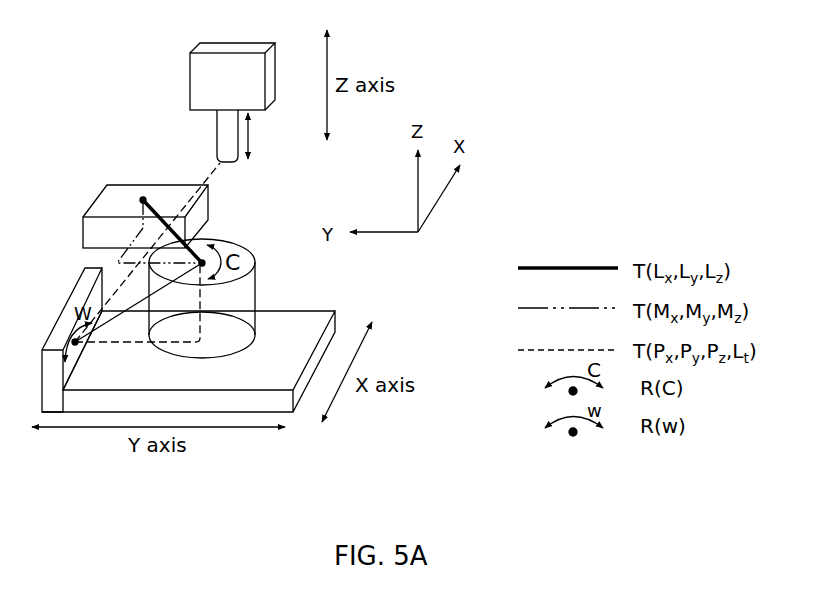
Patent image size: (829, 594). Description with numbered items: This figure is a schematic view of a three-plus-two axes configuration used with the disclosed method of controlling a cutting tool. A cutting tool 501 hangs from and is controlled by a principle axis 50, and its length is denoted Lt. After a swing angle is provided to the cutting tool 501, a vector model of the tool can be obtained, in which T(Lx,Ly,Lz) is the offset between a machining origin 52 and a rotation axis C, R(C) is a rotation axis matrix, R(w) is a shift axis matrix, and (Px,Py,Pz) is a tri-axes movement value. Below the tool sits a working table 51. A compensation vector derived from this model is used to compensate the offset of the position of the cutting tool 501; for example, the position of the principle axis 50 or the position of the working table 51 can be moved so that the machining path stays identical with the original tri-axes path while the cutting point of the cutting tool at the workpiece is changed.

The principle axis 50 is at (196, 95).
The cutting tool 501 is at (222, 130).
The machining origin 52 is at (143, 198).
The working table 51 is at (287, 406).